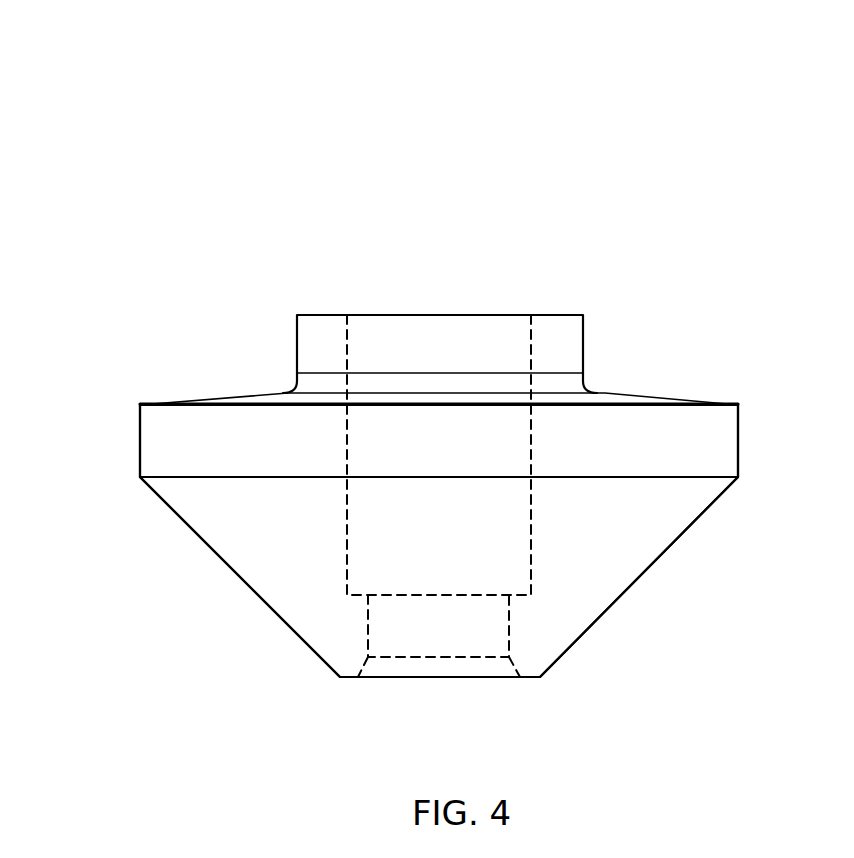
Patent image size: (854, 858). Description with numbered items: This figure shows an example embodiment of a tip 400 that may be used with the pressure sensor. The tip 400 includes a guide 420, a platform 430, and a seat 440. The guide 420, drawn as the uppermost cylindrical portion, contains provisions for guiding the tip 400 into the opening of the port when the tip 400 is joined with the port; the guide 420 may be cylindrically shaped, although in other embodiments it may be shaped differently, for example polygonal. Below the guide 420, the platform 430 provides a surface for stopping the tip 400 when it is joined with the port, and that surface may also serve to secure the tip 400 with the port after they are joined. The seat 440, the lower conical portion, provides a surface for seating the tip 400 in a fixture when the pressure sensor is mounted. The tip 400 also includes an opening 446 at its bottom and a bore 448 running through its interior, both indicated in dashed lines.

The tip 400 is at (148, 78).
The guide 420 is at (305, 340).
The platform 430 is at (137, 373).
The seat 440 is at (137, 483).
The opening 446 is at (437, 668).
The bore 448 is at (462, 527).